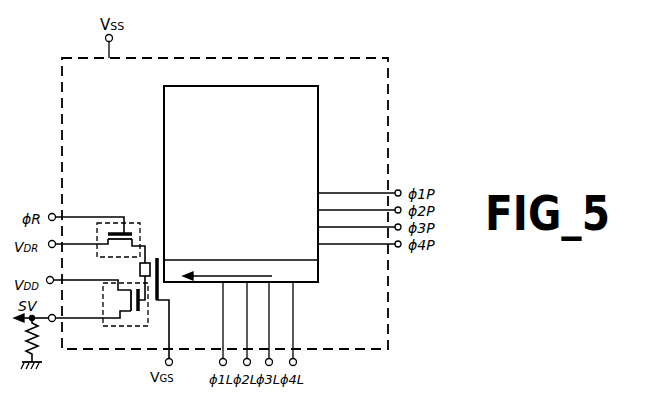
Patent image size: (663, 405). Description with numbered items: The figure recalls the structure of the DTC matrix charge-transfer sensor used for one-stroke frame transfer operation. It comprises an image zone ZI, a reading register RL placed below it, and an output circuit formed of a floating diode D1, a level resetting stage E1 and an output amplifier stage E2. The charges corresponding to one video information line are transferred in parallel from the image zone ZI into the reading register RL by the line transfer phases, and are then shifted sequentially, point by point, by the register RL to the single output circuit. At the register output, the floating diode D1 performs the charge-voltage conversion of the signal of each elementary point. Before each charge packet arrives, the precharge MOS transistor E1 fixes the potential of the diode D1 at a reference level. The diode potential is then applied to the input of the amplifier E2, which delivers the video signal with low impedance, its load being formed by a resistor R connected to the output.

The image zone ZI is at (241, 184).
The reading register RL is at (241, 270).
The level resetting stage E1 is at (124, 223).
The output amplifier stage E2 is at (128, 330).
The floating diode D1 is at (140, 270).
The resistor R is at (26, 336).